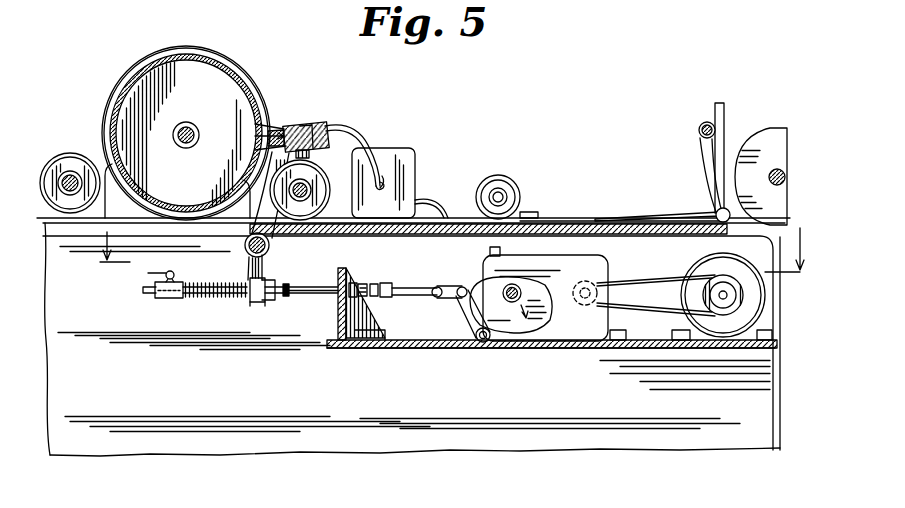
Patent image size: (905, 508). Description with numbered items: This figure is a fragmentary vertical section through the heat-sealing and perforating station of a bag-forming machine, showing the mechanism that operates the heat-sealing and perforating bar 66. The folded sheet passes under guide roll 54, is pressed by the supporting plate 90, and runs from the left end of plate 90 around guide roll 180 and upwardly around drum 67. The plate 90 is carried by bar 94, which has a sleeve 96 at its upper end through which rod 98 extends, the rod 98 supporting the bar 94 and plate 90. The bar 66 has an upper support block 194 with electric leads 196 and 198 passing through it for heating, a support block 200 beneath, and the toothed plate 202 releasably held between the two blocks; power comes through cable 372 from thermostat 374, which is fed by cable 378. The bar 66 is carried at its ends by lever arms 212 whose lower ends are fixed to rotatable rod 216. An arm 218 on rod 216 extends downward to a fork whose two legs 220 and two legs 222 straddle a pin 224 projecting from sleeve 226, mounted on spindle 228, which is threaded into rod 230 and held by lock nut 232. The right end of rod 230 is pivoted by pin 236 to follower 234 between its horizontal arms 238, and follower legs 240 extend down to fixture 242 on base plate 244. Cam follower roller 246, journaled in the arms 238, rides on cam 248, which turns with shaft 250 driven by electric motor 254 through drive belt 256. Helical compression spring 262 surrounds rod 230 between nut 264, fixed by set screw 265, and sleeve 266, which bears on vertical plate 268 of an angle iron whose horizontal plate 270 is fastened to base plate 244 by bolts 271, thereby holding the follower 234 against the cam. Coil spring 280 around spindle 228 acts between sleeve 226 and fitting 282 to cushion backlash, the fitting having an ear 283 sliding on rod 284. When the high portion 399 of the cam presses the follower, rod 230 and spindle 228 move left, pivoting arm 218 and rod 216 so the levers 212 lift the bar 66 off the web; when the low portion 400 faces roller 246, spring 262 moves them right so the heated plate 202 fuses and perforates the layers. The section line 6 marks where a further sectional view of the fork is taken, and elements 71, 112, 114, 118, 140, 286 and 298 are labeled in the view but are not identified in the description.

The section line 6- 6 is at (450, 250).
The guide roll 54 is at (764, 138).
The heat-sealing and perforating bar 66 is at (331, 122).
The drum 67 is at (124, 52).
The guide roller 71 is at (68, 156).
The supporting plate 90 is at (374, 191).
The bar 94 is at (702, 164).
The sleeve 96 is at (698, 130).
The rod 98 is at (708, 122).
The rail 112 is at (620, 236).
The plate 114 is at (572, 216).
The tape 118 is at (634, 214).
The roller 140 is at (504, 176).
The guide roll 180 is at (318, 176).
The upper support block 194 is at (296, 124).
The electric lead 196 is at (252, 120).
The electric lead 198 is at (314, 125).
The support block 200 is at (253, 150).
The plate 202 is at (252, 135).
The lever arms 212 is at (278, 240).
The rotatable rod 216 is at (246, 250).
The arm 218 is at (248, 268).
The legs 220 is at (264, 304).
The legs 222 is at (254, 305).
The pin 224 is at (290, 272).
The sleeve 226 is at (290, 298).
The spindle 228 is at (145, 290).
The rod 230 is at (404, 296).
The lock nut 232 is at (318, 280).
The follower 234 is at (447, 280).
The pin 236 is at (445, 300).
The horizontal arms 238 is at (462, 308).
The follower legs 240 is at (510, 305).
The fixture 242 is at (480, 343).
The base plate 244 is at (588, 352).
The cam follower roller 246 is at (473, 264).
The cam 248 is at (560, 320).
The shaft 250 is at (518, 284).
The electric motor 254 is at (718, 342).
The drive belt 256 is at (684, 276).
The helical compression spring 262 is at (366, 282).
The nut 264 is at (382, 282).
The set screw 265 is at (392, 290).
The sleeve 266 is at (350, 280).
The vertical plate 268 is at (340, 322).
The horizontal plate 270 is at (370, 340).
The bolts 271 is at (350, 340).
The coil spring 280 is at (216, 297).
The fitting 282 is at (160, 300).
The ear 283 is at (141, 272).
The rod 284 is at (172, 271).
The frame 286 is at (118, 458).
The hub 298 is at (200, 104).
The cable 372 is at (370, 124).
The thermostat 374 is at (406, 150).
The cable 378 is at (452, 186).
The high portion 399 is at (545, 326).
The low portion 400 is at (500, 252).